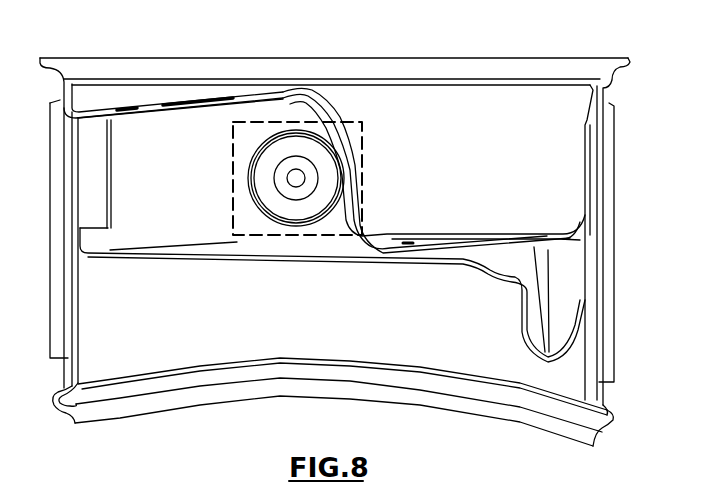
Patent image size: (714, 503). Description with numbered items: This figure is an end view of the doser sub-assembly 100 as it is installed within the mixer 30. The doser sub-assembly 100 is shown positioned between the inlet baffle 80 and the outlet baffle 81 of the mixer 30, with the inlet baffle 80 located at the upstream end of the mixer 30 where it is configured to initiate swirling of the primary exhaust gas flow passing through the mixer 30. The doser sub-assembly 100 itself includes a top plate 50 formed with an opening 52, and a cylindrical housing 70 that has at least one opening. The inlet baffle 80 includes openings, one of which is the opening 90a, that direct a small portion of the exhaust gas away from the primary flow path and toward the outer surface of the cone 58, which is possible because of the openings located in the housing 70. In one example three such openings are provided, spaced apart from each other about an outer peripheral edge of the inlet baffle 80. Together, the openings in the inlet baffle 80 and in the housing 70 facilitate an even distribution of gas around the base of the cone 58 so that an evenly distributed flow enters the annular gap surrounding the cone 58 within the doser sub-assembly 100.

The mixer 30 is at (447, 380).
The top plate 50 is at (290, 172).
The opening 52 is at (295, 172).
The cone 58 is at (278, 212).
The cylindrical housing 70 is at (322, 222).
The inlet baffle 80 is at (153, 110).
The outlet baffle 81 is at (288, 262).
The opening 90a is at (368, 203).
The doser sub-assembly 100 is at (228, 171).